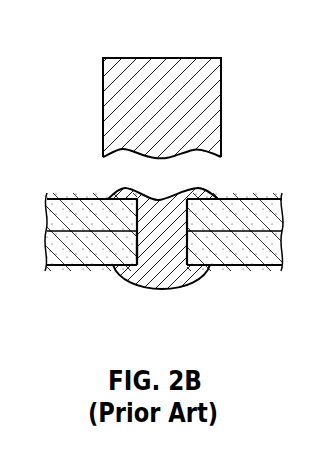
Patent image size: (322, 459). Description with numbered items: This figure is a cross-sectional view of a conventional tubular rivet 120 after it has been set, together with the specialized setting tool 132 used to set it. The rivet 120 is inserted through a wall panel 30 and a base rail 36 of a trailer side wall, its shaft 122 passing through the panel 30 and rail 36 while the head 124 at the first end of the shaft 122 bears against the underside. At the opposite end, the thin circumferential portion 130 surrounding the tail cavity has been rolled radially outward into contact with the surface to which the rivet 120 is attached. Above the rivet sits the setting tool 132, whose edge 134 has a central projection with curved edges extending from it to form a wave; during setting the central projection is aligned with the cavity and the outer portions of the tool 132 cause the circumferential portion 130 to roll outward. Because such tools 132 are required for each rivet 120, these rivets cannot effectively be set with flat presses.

The wall panel 30 is at (50, 197).
The base rail 36 is at (65, 266).
The tubular rivet 120 is at (128, 252).
The shaft 122 is at (190, 243).
The head 124 is at (153, 289).
The circumferential portion 130 is at (122, 197).
The setting tool 132 is at (165, 70).
The edge 134 is at (192, 153).